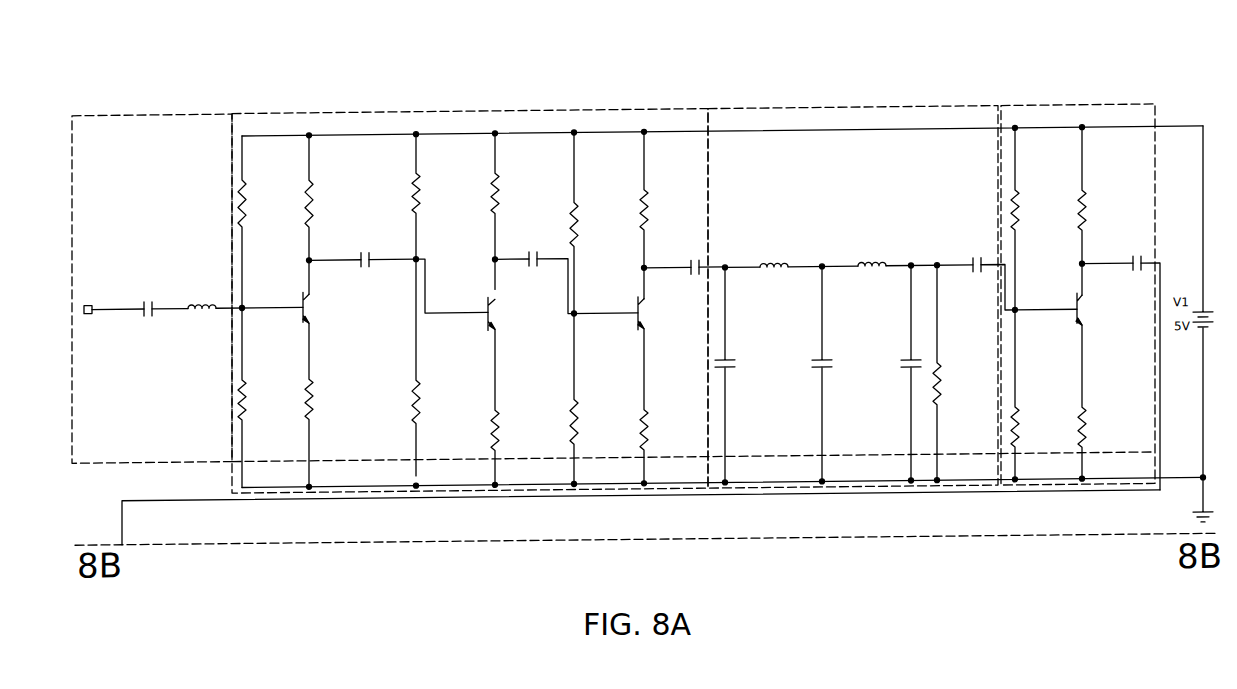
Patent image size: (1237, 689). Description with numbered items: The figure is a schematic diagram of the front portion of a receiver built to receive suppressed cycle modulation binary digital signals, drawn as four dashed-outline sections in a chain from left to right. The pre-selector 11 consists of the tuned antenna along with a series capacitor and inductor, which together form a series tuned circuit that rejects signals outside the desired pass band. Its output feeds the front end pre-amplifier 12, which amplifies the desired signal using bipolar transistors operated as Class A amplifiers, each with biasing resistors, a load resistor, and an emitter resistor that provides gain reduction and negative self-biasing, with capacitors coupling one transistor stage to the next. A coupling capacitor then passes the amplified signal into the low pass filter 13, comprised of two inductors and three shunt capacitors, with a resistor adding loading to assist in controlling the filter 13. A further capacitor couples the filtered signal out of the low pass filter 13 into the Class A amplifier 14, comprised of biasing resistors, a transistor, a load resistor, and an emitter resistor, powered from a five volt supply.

The pre-selector 11 is at (613, 247).
The front end pre-amplifier 12 is at (717, 262).
The low pass filter 13 is at (892, 258).
The Class A amplifier 14 is at (1080, 259).